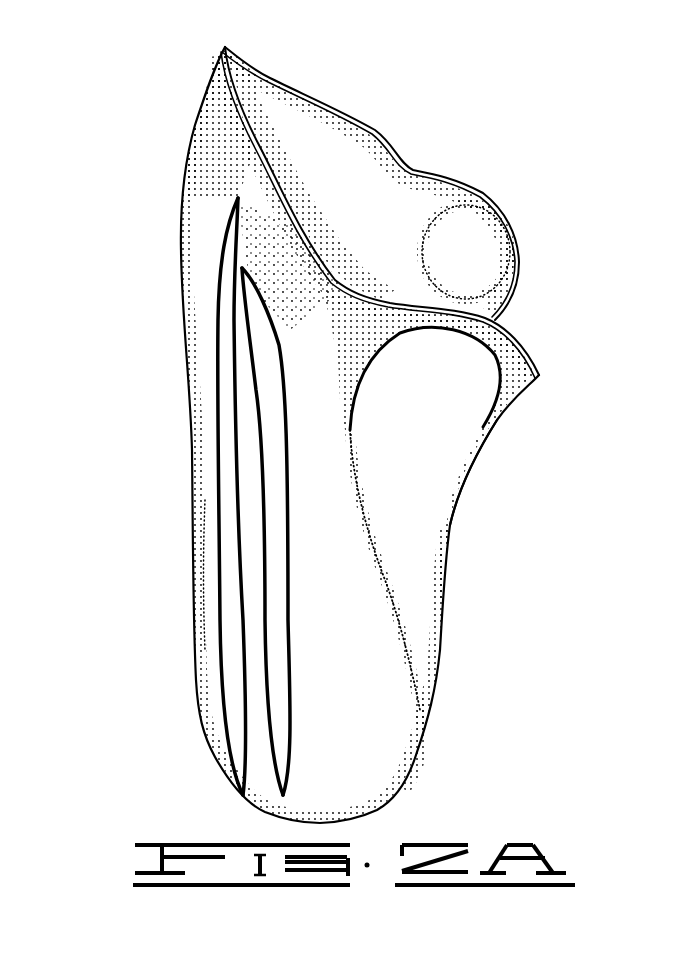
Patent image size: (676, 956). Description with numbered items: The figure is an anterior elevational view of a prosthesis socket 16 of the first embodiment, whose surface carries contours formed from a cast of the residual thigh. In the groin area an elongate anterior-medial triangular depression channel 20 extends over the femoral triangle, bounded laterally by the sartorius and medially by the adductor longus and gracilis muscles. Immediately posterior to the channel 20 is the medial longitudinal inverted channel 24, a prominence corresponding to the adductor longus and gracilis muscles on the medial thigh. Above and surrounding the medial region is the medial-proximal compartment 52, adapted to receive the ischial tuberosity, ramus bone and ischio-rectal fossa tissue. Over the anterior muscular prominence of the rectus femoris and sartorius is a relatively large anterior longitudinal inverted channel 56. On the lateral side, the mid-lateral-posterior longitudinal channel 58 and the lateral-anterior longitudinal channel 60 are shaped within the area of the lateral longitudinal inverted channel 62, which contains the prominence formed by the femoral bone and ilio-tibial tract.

The socket 16 is at (457, 135).
The medial-proximal compartment 52 is at (467, 178).
The elongate anterior-medial triangular depression channel 20 is at (452, 422).
The medial longitudinal inverted channel 24 is at (452, 532).
The lateral longitudinal inverted channel 62 is at (197, 243).
The lateral-anterior longitudinal channel 60 is at (227, 360).
The mid-lateral-posterior longitudinal channel 58 is at (275, 460).
The anterior longitudinal inverted channel 56 is at (315, 600).